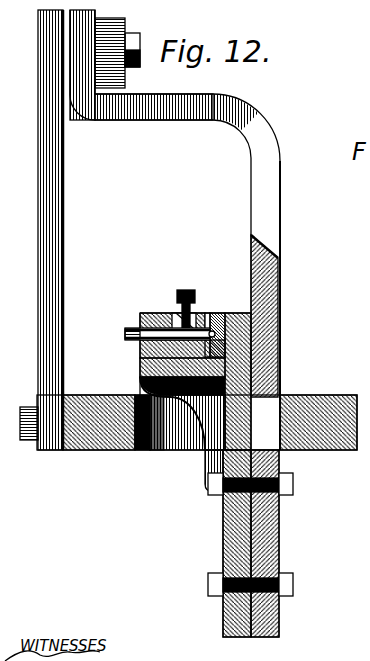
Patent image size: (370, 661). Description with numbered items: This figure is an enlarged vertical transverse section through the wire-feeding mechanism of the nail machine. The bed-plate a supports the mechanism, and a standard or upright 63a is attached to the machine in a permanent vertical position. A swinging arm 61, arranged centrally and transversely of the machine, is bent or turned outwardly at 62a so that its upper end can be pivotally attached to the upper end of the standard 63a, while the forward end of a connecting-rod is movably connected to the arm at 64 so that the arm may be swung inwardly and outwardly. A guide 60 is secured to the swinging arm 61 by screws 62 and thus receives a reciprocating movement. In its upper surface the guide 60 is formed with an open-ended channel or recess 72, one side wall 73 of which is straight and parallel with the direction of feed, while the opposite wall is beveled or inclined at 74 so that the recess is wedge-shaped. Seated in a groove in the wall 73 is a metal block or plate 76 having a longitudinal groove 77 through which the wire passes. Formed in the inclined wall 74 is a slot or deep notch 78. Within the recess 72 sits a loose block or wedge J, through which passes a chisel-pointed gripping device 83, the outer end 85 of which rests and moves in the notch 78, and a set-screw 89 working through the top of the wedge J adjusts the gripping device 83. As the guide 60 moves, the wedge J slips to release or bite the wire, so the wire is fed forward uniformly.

The connection point of connecting-rod to arm 64 is at (135, 41).
The outward bend of swinging arm 62a is at (190, 112).
The standard or upright 63a is at (52, 245).
The swinging arm 61 is at (282, 265).
The straight side wall of channel 73 is at (222, 336).
The beveled or inclined side wall 74 is at (148, 312).
The set-screw 89 is at (189, 290).
The metal block or plate 76 is at (216, 318).
The slot or deep notch 78 is at (142, 350).
The longitudinal groove 77 is at (223, 340).
The outer end of gripping device 85 is at (130, 333).
The gripping device 83 is at (140, 330).
The block or wedge J is at (178, 314).
The open-ended channel or recess 72 is at (182, 396).
The bed-plate a is at (310, 405).
The guide 60 is at (160, 369).
The screws 62 is at (294, 486).